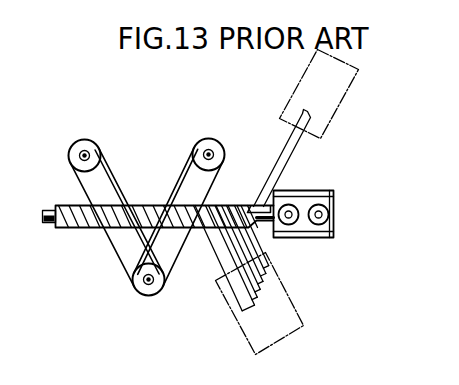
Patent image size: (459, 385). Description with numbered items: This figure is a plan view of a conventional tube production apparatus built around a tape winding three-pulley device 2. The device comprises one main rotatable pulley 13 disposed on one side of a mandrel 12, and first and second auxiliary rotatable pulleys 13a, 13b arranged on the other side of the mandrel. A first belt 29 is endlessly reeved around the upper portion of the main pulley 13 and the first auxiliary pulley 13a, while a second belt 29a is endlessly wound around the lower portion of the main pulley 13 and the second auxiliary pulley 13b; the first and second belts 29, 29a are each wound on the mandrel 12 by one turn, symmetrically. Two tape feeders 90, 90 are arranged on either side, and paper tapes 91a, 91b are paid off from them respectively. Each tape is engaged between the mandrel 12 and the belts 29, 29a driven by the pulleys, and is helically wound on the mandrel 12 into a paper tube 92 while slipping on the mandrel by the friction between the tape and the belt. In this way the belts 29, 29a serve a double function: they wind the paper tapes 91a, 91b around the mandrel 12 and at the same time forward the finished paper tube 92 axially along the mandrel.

The tape winding three-pulley device 2 is at (159, 231).
The mandrel 12 is at (46, 229).
The main rotatable pulley 13 is at (145, 300).
The first auxiliary rotatable pulley 13a is at (73, 147).
The second auxiliary rotatable pulley 13b is at (223, 148).
The first belt 29 is at (128, 250).
The second belt 29a is at (178, 200).
The tape feeder 90 is at (291, 108).
The paper tape 91a is at (275, 163).
The paper tape 91b is at (217, 258).
The paper tube 92 is at (86, 233).